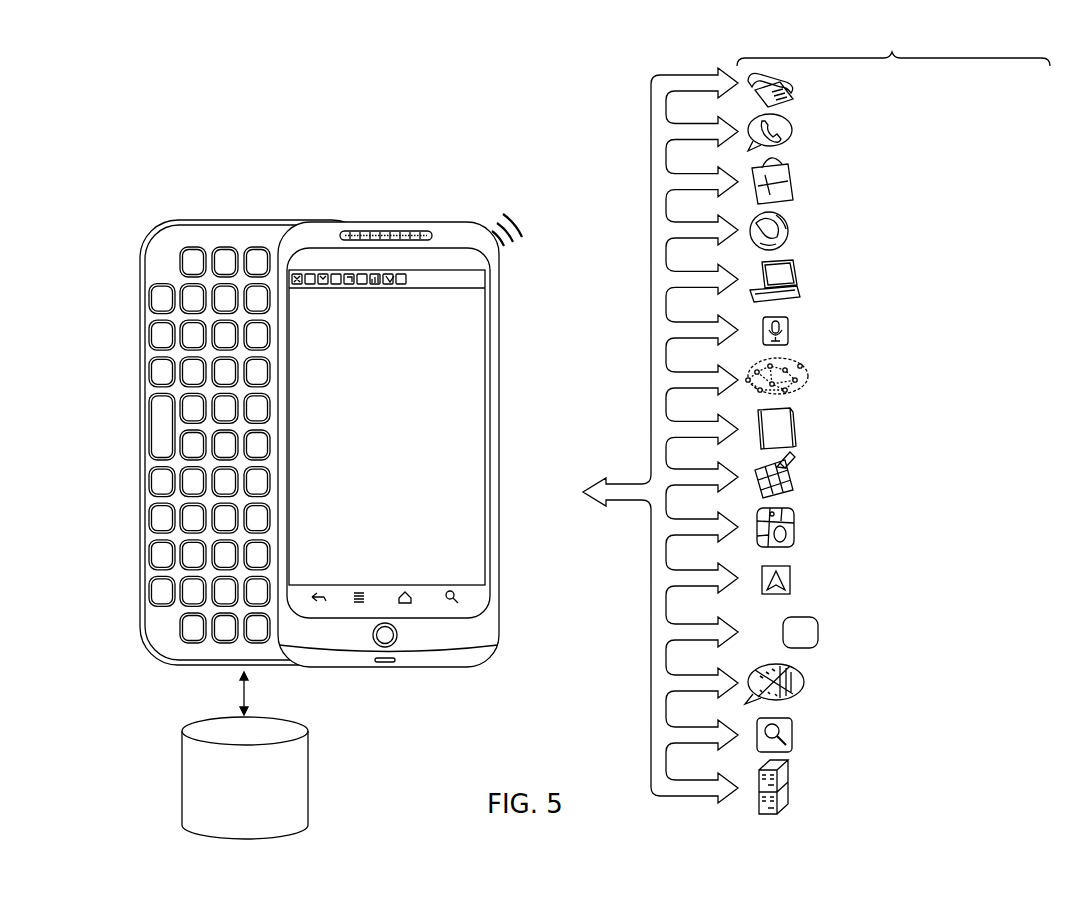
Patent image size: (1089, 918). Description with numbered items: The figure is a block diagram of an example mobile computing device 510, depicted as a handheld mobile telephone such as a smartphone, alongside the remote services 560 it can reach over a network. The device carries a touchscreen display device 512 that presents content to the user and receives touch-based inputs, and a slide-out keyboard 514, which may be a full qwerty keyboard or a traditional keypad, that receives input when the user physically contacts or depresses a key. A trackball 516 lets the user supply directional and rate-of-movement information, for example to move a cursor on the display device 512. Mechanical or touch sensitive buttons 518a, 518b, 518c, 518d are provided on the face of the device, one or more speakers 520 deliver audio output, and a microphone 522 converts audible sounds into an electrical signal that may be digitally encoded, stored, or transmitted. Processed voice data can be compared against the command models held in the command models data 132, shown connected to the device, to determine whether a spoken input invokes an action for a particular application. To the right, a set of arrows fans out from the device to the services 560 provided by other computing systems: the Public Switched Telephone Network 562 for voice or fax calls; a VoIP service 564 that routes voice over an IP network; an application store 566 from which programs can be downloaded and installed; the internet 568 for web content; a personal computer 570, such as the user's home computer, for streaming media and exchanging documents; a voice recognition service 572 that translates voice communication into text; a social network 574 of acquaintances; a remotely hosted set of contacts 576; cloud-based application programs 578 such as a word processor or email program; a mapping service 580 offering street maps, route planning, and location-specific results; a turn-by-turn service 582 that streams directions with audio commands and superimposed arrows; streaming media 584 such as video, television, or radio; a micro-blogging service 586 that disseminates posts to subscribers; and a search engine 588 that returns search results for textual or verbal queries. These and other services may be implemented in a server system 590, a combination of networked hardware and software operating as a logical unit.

The mobile computing device 510 is at (437, 170).
The touchscreen display device 512 is at (498, 438).
The keyboard 514 is at (245, 222).
The trackball 516 is at (397, 636).
The button 518a is at (322, 595).
The button 518b is at (360, 592).
The button 518c is at (405, 592).
The button 518d is at (454, 593).
The speaker 520 is at (393, 231).
The microphone 522 is at (385, 663).
The command models data 132 is at (231, 813).
The services 560 is at (893, 48).
The Public Switched Telephone Network (PSTN) 562 is at (789, 89).
The Voice over Internet Protocol (VoIP) service 564 is at (791, 128).
The application store 566 is at (789, 176).
The internet 568 is at (789, 231).
The personal computer 570 is at (797, 274).
The voice recognition service 572 is at (790, 322).
The social network 574 is at (805, 366).
The contacts 576 is at (795, 427).
The cloud-based application programs 578 is at (795, 476).
The mapping service 580 is at (794, 519).
The turn-by-turn service 582 is at (790, 578).
The streaming media 584 is at (818, 626).
The micro-blogging service 586 is at (805, 680).
The search engine 588 is at (793, 730).
The server system 590 is at (792, 778).